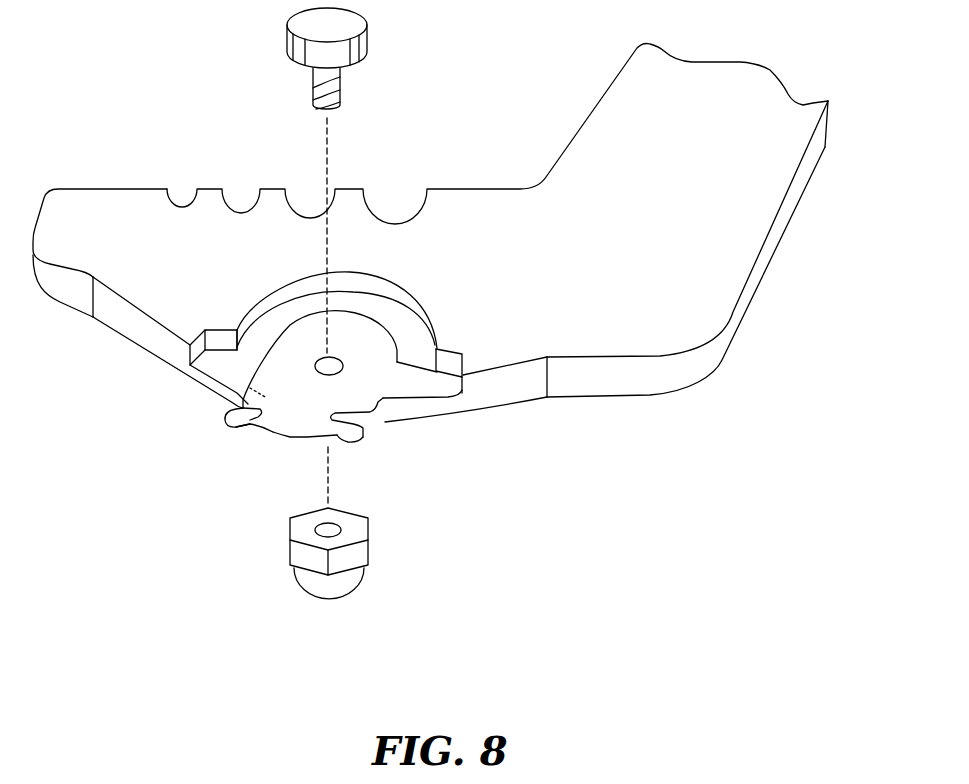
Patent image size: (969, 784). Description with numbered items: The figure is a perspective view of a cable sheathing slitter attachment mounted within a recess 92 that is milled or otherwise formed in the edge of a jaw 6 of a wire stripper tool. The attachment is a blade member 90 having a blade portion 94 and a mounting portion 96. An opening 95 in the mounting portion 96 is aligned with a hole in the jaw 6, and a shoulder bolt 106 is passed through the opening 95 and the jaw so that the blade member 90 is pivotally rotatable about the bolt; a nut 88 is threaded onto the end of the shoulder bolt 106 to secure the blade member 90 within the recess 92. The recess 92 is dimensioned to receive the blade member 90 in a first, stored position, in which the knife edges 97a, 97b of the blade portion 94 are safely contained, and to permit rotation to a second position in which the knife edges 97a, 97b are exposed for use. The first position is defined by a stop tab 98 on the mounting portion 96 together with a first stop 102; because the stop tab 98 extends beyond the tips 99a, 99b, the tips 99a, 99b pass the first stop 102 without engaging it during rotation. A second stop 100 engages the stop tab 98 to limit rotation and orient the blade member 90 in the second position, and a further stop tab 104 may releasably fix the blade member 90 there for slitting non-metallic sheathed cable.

The jaw 6 is at (725, 245).
The nut 88 is at (363, 552).
The blade member 90 is at (325, 411).
The recess 92 is at (417, 298).
The blade portion 94 is at (292, 432).
The opening 95 is at (338, 356).
The mounting portion 96 is at (367, 332).
The knife edge 97a is at (250, 405).
The knife edge 97b is at (365, 422).
The stop tab 98 is at (419, 383).
The tip 99a is at (232, 428).
The tip 99b is at (350, 444).
The second stop 100 is at (452, 362).
The first stop 102 is at (220, 343).
The stop tab 104 is at (268, 398).
The shoulder bolt 106 is at (287, 47).